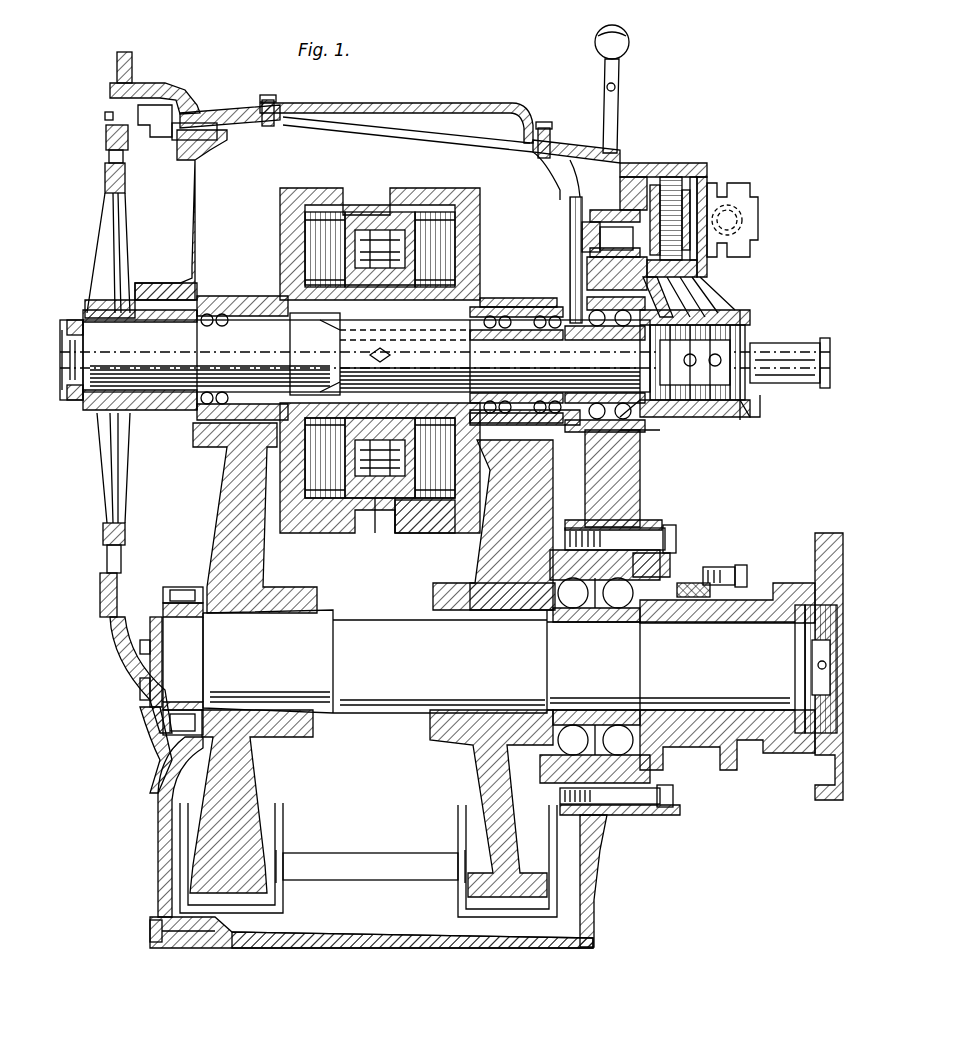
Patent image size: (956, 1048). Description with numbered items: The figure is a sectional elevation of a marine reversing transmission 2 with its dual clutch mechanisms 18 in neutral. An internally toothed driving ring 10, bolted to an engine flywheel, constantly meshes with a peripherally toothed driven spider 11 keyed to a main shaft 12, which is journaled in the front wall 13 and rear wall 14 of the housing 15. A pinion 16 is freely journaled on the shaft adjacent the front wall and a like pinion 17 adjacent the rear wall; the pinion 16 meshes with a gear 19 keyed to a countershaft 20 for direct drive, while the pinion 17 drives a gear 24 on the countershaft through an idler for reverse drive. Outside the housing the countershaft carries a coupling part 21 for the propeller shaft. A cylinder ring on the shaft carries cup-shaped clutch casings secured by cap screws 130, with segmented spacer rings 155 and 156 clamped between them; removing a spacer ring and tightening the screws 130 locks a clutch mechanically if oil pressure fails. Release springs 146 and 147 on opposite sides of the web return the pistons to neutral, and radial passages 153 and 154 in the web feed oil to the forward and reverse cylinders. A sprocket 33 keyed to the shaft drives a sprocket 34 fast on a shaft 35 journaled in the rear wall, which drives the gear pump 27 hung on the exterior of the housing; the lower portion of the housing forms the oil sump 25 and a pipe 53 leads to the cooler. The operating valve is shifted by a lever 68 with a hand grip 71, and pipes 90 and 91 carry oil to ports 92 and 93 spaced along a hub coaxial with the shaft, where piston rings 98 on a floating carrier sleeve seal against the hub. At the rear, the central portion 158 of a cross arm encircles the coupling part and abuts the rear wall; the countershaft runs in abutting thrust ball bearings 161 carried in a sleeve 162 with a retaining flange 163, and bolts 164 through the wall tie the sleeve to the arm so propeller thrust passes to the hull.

The transmission assembly 2 is at (722, 98).
The driving ring 10 is at (106, 134).
The driven spider 11 is at (105, 178).
The main shaft 12 is at (498, 170).
The front wall 13 is at (193, 218).
The rear wall 14 is at (643, 470).
The housing 15 is at (232, 115).
The pinion 16 is at (225, 296).
The pinion 17 is at (505, 298).
The dual clutch mechanisms 18 is at (376, 186).
The gear 19 is at (262, 558).
The countershaft 20 is at (375, 714).
The coupling part 21 is at (787, 745).
The gear 24 is at (478, 772).
The sump 25 is at (336, 937).
The gear pump 27 is at (684, 163).
The sprocket 33 is at (566, 416).
The sprocket 34 is at (570, 212).
The shaft 35 is at (572, 238).
The pipe 53 is at (742, 200).
The lever 68 is at (614, 124).
The hand grip 71 is at (629, 48).
The pipe 90 is at (690, 290).
The pipe 91 is at (682, 306).
The port 92 is at (710, 418).
The port 93 is at (680, 418).
The piston rings 98 is at (748, 420).
The cap screws 130 is at (410, 188).
The spring 146 is at (358, 522).
The spring 147 is at (395, 533).
The radial passage 153 is at (368, 328).
The radial passage 154 is at (343, 356).
The spacer ring 155 is at (340, 188).
The spacer ring 156 is at (416, 525).
The central portion 158 is at (650, 520).
The thrust ball bearings 161 is at (592, 615).
The sleeve 162 is at (548, 545).
The retaining flange 163 is at (548, 570).
The bolts 164 is at (680, 536).